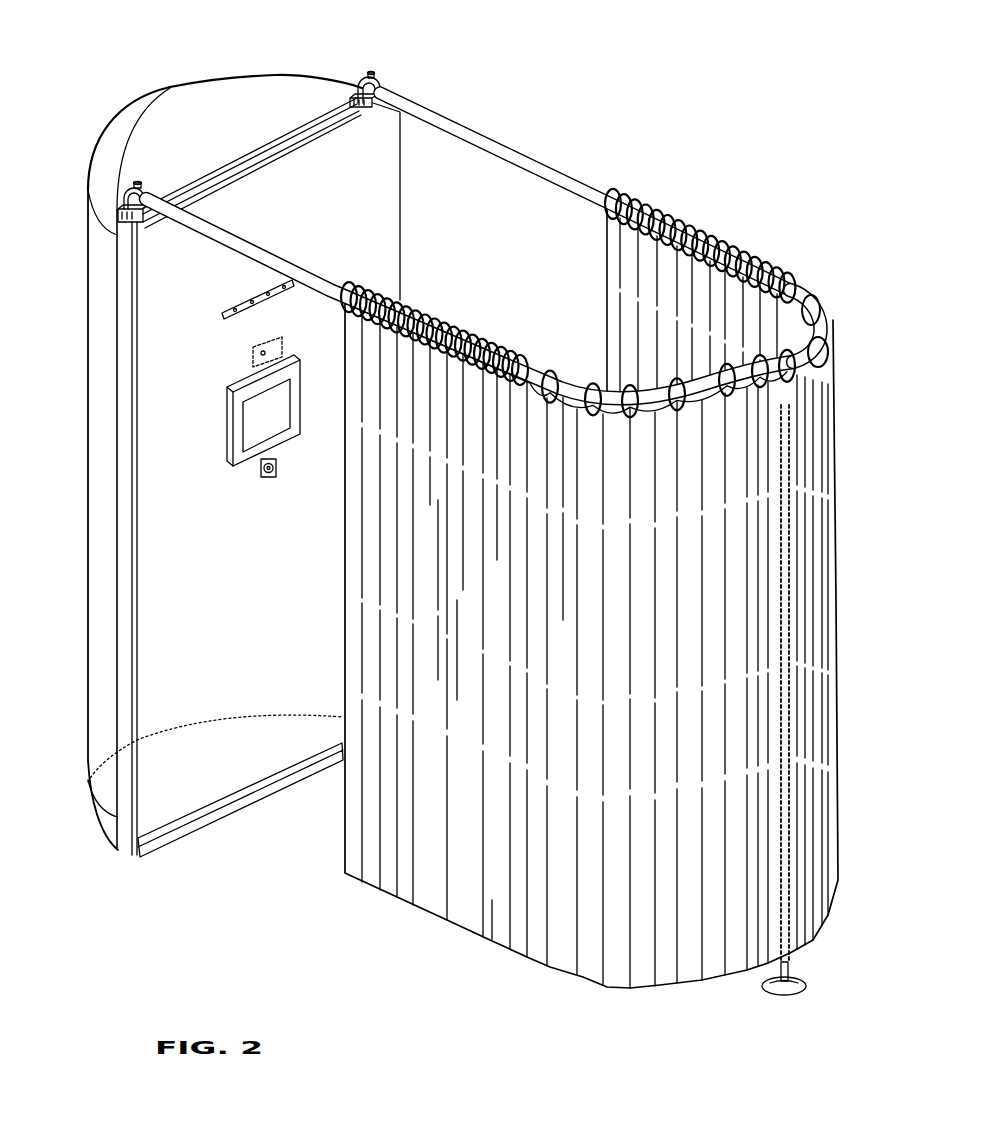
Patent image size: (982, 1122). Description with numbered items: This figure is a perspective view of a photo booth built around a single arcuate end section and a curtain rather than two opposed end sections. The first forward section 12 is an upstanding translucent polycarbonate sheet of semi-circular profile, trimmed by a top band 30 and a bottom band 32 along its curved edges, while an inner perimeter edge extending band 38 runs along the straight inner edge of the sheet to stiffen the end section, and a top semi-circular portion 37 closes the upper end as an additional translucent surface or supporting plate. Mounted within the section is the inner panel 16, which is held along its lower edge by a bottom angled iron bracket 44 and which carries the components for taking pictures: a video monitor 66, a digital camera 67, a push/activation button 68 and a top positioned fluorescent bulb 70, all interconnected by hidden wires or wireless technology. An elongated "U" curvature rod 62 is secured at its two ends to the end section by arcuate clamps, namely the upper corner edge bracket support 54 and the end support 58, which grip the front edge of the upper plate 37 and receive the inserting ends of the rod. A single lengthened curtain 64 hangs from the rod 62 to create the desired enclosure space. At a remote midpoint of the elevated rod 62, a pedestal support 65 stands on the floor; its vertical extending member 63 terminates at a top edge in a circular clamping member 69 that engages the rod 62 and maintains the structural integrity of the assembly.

The first forward section 12 is at (102, 512).
The inner panel 16 is at (266, 479).
The top band 30 is at (90, 200).
The bottom band 32 is at (102, 818).
The top semi-circular portion 37 is at (175, 149).
The inner perimeter edge extending band 38 is at (300, 128).
The bottom angled iron bracket 44 is at (232, 802).
The upper corner edge bracket support 54 is at (362, 78).
The end support 58 is at (124, 193).
The "U" curvature rod 62 is at (520, 157).
The vertical extending member 63 is at (788, 963).
The curtain 64 is at (591, 599).
The pedestal support 65 is at (790, 987).
The video monitor 66 is at (253, 417).
The camera 67 is at (261, 354).
The push/activation button 68 is at (277, 468).
The clamping member 69 is at (780, 360).
The fluorescent bulb 70 is at (247, 300).